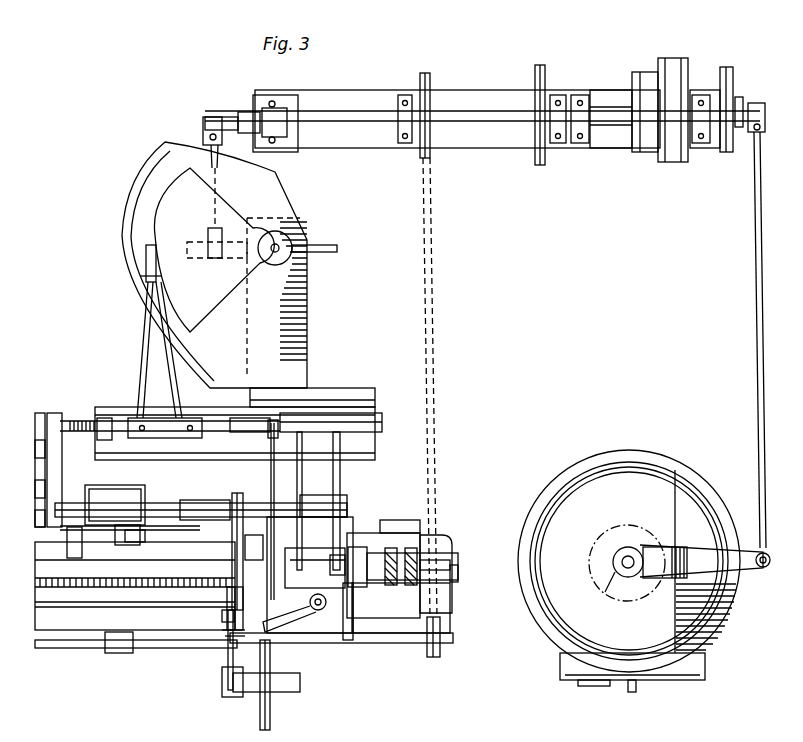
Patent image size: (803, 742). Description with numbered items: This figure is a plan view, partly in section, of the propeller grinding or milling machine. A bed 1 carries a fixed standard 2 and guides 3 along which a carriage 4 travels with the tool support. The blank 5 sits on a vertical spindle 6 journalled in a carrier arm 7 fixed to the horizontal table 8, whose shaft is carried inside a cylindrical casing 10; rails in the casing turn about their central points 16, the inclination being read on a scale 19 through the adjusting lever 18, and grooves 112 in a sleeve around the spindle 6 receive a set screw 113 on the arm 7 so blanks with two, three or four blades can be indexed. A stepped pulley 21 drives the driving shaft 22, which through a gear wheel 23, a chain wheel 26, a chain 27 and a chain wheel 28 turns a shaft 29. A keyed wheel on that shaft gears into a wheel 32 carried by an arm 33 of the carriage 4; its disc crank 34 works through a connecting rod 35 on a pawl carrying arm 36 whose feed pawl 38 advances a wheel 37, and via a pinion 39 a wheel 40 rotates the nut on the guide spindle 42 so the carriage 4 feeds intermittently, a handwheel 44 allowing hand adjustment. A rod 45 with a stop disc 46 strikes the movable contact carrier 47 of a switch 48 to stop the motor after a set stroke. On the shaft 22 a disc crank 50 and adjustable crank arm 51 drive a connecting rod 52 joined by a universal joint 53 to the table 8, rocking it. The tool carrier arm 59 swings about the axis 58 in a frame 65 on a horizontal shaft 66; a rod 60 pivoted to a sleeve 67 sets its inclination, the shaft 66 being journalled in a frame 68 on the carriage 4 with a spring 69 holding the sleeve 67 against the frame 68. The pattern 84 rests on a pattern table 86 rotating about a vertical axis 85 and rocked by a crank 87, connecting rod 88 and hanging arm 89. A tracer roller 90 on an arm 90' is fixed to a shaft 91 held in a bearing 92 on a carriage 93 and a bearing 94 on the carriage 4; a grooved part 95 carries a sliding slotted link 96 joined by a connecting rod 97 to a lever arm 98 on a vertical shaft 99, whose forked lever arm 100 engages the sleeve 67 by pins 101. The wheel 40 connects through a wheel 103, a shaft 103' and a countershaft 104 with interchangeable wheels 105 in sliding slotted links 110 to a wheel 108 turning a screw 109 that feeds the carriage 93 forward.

The bed 1 is at (408, 519).
The fixed standard 2 is at (146, 492).
The guides 3 is at (78, 622).
The carriage 4 is at (350, 640).
The blank 5 is at (618, 537).
The vertical spindle 6 is at (609, 591).
The carrier arm 7 is at (660, 580).
The horizontal table 8 is at (560, 645).
The cylindrical casing 10 is at (712, 632).
The central points 16 is at (634, 692).
The adjusting lever 18 is at (598, 687).
The scale 19 is at (670, 681).
The stepped pulley 21 is at (688, 72).
The driving shaft 22 is at (607, 100).
The gear wheel 23 is at (535, 73).
The chain wheel 26 is at (432, 80).
The chain 27 is at (428, 265).
The chain wheel 28 is at (432, 657).
The shaft 29 is at (395, 643).
The wheel 32 is at (270, 714).
The arm 33 is at (298, 690).
The disc crank 34 is at (232, 697).
The connecting rod 35 is at (228, 665).
The pawl carrying arm 36 is at (230, 637).
The wheel 37 is at (227, 600).
The feed pawl 38 is at (225, 632).
The pinion 39 is at (228, 622).
The wheel 40 is at (243, 548).
The guide spindle 42 is at (119, 584).
The handwheel 44 is at (210, 641).
The rod 45 is at (188, 540).
The stop disc 46 is at (72, 550).
The movable contact carrier 47 is at (125, 545).
The switch 48 is at (135, 545).
The disc crank 50 is at (733, 76).
The crank arm 51 is at (742, 106).
The connecting rod 52 is at (760, 365).
The universal joint 53 is at (760, 545).
The axis 58 is at (450, 530).
The carrier arm 59 is at (455, 565).
The rod 60 is at (350, 545).
The frame 65 is at (401, 608).
The horizontal shaft 66 is at (300, 512).
The sleeve 67 is at (372, 545).
The frame 68 is at (412, 545).
The spring 69 is at (302, 563).
The pattern 84 is at (230, 218).
The vertical axis 85 is at (275, 256).
The pattern table 86 is at (298, 308).
The crank 87 is at (230, 116).
The connecting rod 88 is at (219, 160).
The arm 89 is at (216, 260).
The tracer roller 90 is at (162, 247).
The arm 90' is at (128, 350).
The shaft 91 is at (168, 400).
The bearing 92 is at (100, 418).
The carriage 93 is at (142, 440).
The bearing 94 is at (330, 412).
The grooved part 95 is at (252, 416).
The sliding slotted link 96 is at (310, 392).
The connecting rod 97 is at (270, 470).
The lever arm 98 is at (290, 630).
The vertical shaft 99 is at (322, 610).
The lever arm 100 is at (407, 584).
The pins 101 is at (352, 546).
The wheel 103 is at (201, 537).
The shaft 103' is at (206, 501).
The countershaft 104 is at (35, 520).
The wheel 105 is at (35, 490).
The wheel 108 is at (41, 414).
The screw 109 is at (70, 420).
The sliding slotted links 110 is at (35, 460).
The grooves 112 is at (632, 548).
The set screw 113 is at (688, 562).